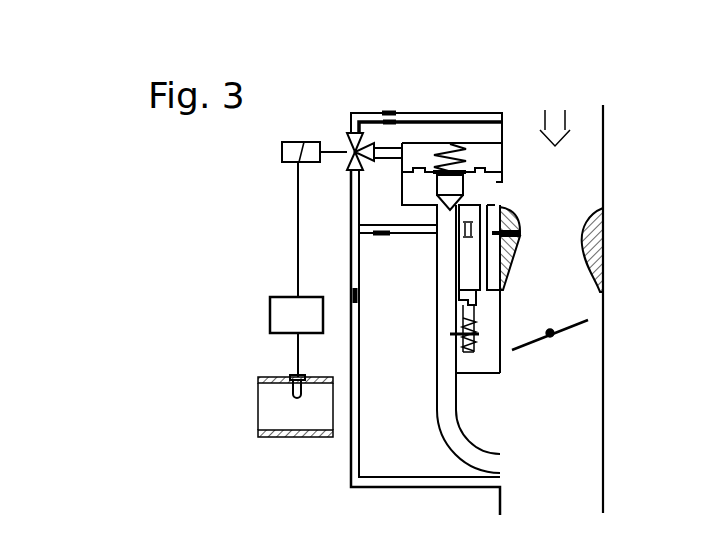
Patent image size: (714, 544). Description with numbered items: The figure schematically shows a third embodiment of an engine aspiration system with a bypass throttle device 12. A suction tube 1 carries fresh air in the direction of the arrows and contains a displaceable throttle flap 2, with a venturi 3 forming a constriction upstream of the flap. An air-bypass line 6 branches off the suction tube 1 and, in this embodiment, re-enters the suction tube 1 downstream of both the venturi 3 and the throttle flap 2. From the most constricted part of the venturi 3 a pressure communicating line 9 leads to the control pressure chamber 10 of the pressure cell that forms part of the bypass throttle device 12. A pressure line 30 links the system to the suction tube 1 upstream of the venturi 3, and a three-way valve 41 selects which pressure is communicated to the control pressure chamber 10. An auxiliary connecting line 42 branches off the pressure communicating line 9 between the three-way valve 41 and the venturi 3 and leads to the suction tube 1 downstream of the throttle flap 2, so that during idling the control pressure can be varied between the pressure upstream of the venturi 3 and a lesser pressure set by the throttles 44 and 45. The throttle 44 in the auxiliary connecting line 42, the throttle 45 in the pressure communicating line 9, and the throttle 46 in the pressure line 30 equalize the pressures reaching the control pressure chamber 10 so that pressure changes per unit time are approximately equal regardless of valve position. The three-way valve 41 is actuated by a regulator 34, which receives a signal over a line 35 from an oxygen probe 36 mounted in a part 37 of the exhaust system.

The suction tube 1 is at (603, 446).
The throttle flap 2 is at (557, 333).
The venturi 3 is at (603, 262).
The air-bypass line 6 is at (450, 410).
The pressure communicating line 9 is at (420, 234).
The control pressure chamber 10 is at (502, 168).
The bypass throttle device 12 is at (455, 140).
The pressure line 30 is at (429, 118).
The regulator 34 is at (290, 308).
The line 35 is at (298, 358).
The oxygen probe 36 is at (292, 375).
The part of exhaust system 37 is at (285, 402).
The three-way valve 41 is at (352, 146).
The auxiliary connecting line 42 is at (360, 370).
The throttle 44 is at (358, 293).
The throttle 45 is at (380, 236).
The throttle 46 is at (388, 110).